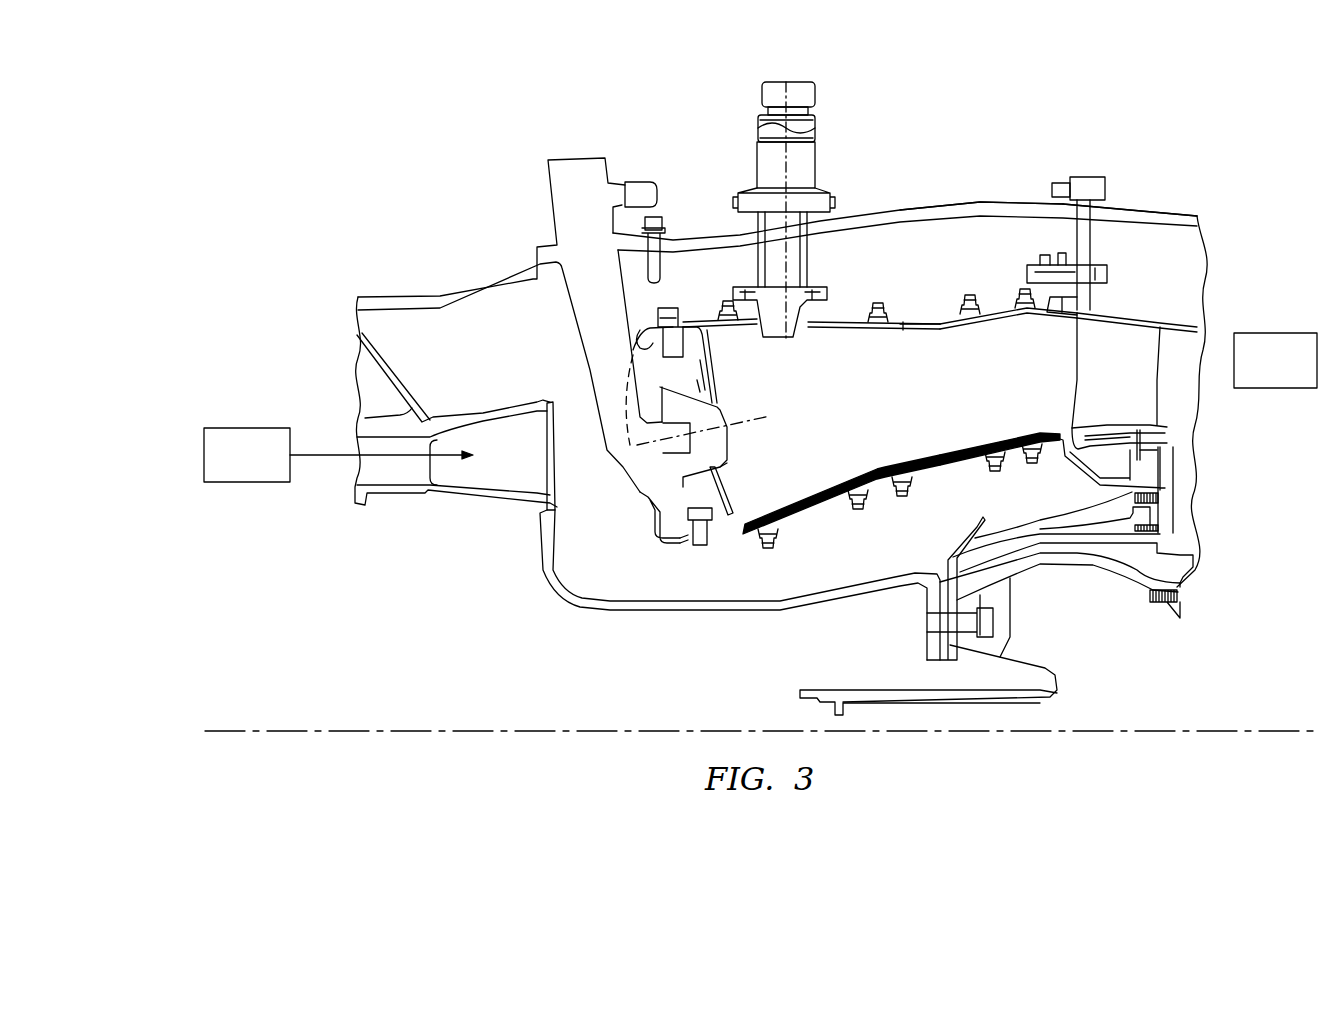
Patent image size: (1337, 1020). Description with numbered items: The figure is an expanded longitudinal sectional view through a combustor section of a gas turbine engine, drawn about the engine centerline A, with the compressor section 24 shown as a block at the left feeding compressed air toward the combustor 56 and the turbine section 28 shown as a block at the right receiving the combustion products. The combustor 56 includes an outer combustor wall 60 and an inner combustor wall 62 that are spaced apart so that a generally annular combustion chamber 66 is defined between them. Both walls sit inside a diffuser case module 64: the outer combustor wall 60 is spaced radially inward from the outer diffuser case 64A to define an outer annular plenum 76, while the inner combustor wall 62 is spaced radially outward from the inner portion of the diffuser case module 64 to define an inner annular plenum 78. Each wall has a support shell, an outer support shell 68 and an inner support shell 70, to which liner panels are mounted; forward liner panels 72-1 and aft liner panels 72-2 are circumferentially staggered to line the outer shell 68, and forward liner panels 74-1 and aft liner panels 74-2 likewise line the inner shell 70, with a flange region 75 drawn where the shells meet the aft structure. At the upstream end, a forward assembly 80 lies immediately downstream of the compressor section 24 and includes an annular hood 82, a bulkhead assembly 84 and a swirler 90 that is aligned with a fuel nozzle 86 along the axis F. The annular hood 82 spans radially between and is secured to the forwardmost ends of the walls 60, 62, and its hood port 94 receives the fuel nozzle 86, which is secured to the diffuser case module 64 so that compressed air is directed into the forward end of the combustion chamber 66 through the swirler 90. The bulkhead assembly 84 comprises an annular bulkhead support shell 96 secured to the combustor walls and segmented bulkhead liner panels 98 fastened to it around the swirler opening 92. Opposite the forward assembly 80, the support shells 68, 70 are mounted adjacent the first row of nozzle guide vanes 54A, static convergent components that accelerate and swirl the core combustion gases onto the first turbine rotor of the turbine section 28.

The compressor section 24 is at (260, 467).
The turbine section 28 is at (1289, 372).
The first row of Nozzle Guide Vanes 54A is at (1137, 385).
The combustor 56 is at (1008, 128).
The outer combustor wall 60 is at (928, 309).
The inner combustor wall 62 is at (880, 501).
The diffuser case module 64 is at (921, 208).
The outer diffuser case 64A is at (980, 206).
The combustion chamber 66 is at (894, 415).
The outer support shell 68 is at (904, 321).
The inner support shell 70 is at (963, 472).
The forward liner panels 72-1 is at (817, 326).
The aft liner panels 72-2 is at (963, 326).
The forward liner panels 74-1 is at (813, 503).
The aft liner panels 74-2 is at (973, 446).
The aft support flange 75 is at (1043, 462).
The outer annular plenum 76 is at (875, 263).
The inner annular plenum 78 is at (857, 585).
The forward assembly 80 is at (650, 548).
The annular hood 82 is at (653, 510).
The bulkhead assembly 84 is at (717, 376).
The fuel nozzle 86 is at (605, 265).
The swirler 90 is at (727, 465).
The swirler opening 92 is at (724, 401).
The hood port 94 is at (640, 495).
The bulkhead support shell 96 is at (653, 538).
The bulkhead liner panels 98 is at (728, 480).
The axis F is at (770, 413).
The engine central axis A is at (1146, 729).